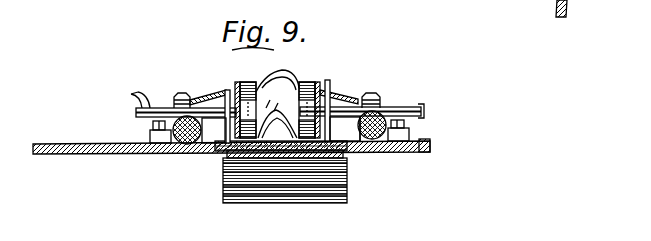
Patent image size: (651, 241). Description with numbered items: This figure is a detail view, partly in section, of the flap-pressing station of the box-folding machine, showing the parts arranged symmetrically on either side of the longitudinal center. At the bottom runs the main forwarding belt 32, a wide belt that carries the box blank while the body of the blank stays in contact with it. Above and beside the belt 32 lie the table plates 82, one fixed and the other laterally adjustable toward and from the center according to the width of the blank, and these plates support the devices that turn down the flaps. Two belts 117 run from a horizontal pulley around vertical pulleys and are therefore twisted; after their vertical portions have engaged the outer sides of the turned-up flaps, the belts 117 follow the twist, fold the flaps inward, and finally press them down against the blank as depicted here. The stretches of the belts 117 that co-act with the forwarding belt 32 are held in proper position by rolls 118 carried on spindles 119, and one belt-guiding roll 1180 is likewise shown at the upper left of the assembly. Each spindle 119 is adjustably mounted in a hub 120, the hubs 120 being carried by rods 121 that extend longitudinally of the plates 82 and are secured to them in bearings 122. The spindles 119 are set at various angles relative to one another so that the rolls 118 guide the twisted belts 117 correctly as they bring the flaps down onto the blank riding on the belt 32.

The table plate 82 is at (68, 144).
The main forwarding belt 32 is at (347, 158).
The spindle 119 is at (418, 108).
The knurled nut and strut 1180 is at (235, 87).
The belt-guiding roll 118 is at (252, 90).
The belt 117 is at (279, 137).
The bearing 122 is at (169, 137).
The rod 121 is at (168, 141).
The hub 120 is at (201, 140).